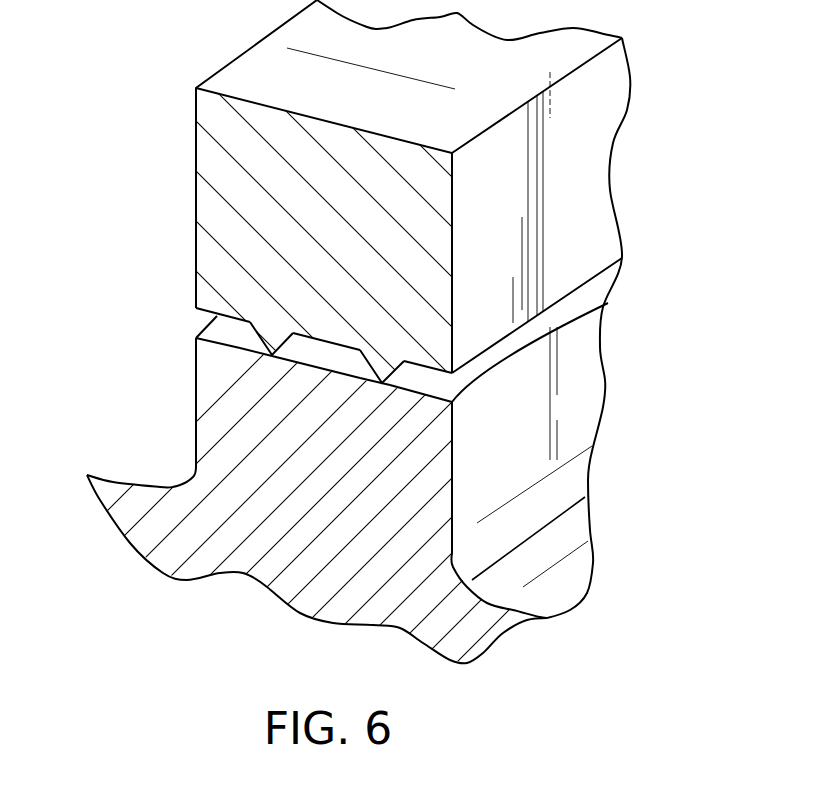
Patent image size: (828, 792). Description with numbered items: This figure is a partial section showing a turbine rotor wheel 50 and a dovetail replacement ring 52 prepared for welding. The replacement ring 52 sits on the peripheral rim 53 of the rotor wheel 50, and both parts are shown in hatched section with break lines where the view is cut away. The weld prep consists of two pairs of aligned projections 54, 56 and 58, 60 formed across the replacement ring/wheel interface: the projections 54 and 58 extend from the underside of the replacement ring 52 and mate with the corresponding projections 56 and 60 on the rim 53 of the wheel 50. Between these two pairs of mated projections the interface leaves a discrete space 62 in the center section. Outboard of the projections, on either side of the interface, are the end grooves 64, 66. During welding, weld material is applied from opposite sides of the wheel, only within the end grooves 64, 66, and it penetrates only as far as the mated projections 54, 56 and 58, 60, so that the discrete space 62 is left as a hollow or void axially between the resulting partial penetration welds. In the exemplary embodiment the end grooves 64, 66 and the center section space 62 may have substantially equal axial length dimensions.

The turbine rotor wheel 50 is at (180, 455).
The dovetail replacement ring 52 is at (195, 160).
The peripheral rim 53 is at (534, 349).
The projection 54 is at (260, 334).
The projection 56 is at (258, 352).
The projection 58 is at (369, 360).
The projection 60 is at (368, 377).
The discrete space 62 is at (308, 356).
The end groove 64 is at (217, 333).
The end groove 66 is at (437, 388).